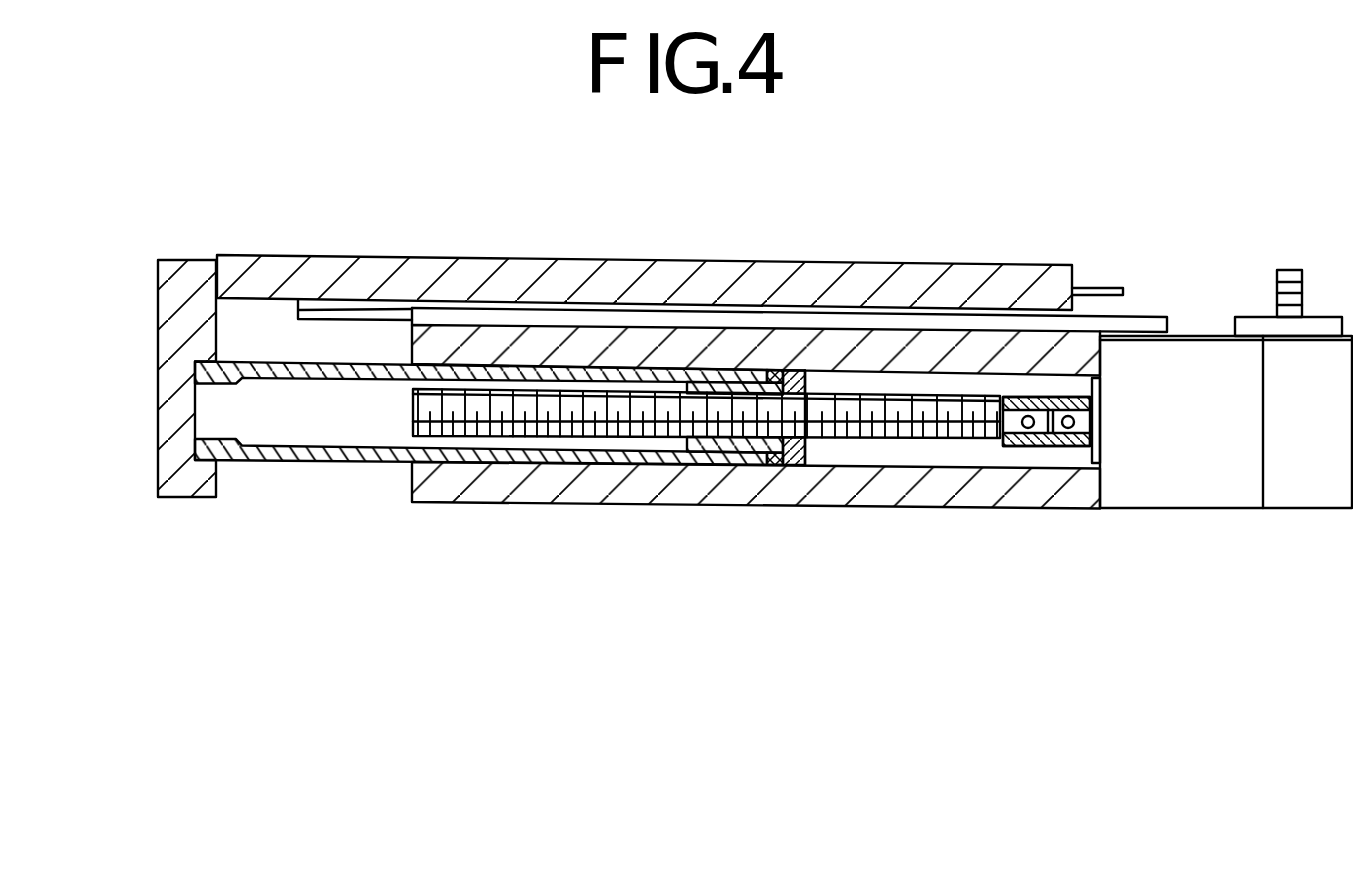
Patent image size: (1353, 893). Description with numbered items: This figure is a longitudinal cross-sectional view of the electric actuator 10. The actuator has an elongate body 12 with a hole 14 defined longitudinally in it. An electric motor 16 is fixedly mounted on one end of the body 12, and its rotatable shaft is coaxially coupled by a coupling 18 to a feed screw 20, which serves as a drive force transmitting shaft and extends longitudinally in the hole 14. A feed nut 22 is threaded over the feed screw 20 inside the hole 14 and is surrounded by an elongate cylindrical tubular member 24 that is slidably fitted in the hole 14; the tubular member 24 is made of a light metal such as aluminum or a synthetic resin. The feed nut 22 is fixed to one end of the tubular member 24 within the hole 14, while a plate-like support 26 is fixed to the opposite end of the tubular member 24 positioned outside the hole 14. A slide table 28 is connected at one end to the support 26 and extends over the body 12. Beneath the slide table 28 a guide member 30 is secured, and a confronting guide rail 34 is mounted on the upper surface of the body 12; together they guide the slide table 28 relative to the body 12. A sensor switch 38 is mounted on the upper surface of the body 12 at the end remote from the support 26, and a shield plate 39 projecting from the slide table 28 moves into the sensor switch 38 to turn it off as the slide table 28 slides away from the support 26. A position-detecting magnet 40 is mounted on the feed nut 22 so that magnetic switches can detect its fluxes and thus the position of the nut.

The electric actuator 10 is at (1290, 176).
The body 12 is at (865, 506).
The hole 14 is at (945, 460).
The electric motor 16 is at (1190, 470).
The coupling 18 is at (1029, 447).
The feed screw 20 is at (482, 430).
The feed nut 22 is at (698, 458).
The tubular member 24 is at (300, 461).
The support 26 is at (168, 348).
The slide table 28 is at (633, 276).
The guide member 30 is at (333, 305).
The guide rail 34 is at (1107, 323).
The sensor switch 38 is at (1286, 268).
The shield plate 39 is at (1096, 288).
The position-detecting magnet 40 is at (775, 466).